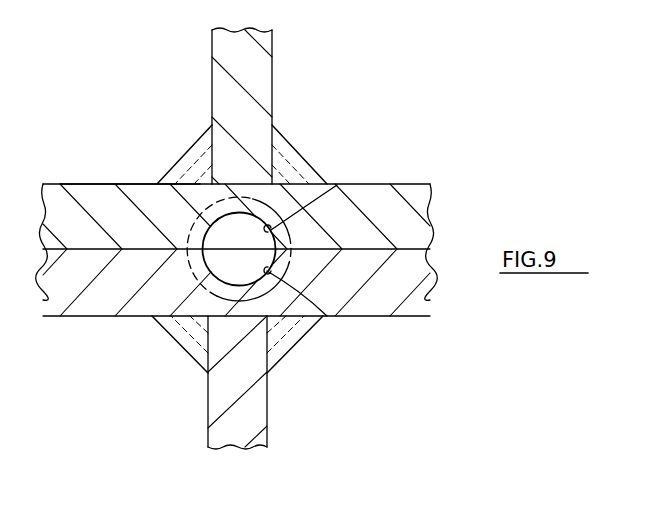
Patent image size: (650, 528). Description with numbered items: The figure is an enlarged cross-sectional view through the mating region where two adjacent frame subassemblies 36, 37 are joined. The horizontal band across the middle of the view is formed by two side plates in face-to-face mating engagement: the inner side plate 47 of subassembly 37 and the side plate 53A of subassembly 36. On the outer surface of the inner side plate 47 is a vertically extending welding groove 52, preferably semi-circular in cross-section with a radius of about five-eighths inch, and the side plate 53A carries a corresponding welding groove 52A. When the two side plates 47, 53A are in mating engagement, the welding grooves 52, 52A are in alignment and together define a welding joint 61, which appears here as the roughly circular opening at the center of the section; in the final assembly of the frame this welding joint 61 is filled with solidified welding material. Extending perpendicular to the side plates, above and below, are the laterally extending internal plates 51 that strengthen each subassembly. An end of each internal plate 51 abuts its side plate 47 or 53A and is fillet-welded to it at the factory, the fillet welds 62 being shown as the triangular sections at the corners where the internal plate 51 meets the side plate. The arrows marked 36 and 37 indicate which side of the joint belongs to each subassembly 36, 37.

The subassembly 36 is at (140, 143).
The subassembly 37 is at (180, 375).
The inner side plate 47 is at (77, 314).
The laterally extending internal plate 51 is at (263, 71).
The welding groove 52 is at (326, 317).
The welding groove 52A is at (337, 189).
The side plate 53A is at (83, 190).
The welding joint 61 is at (276, 240).
The fillet weld 62 is at (187, 152).